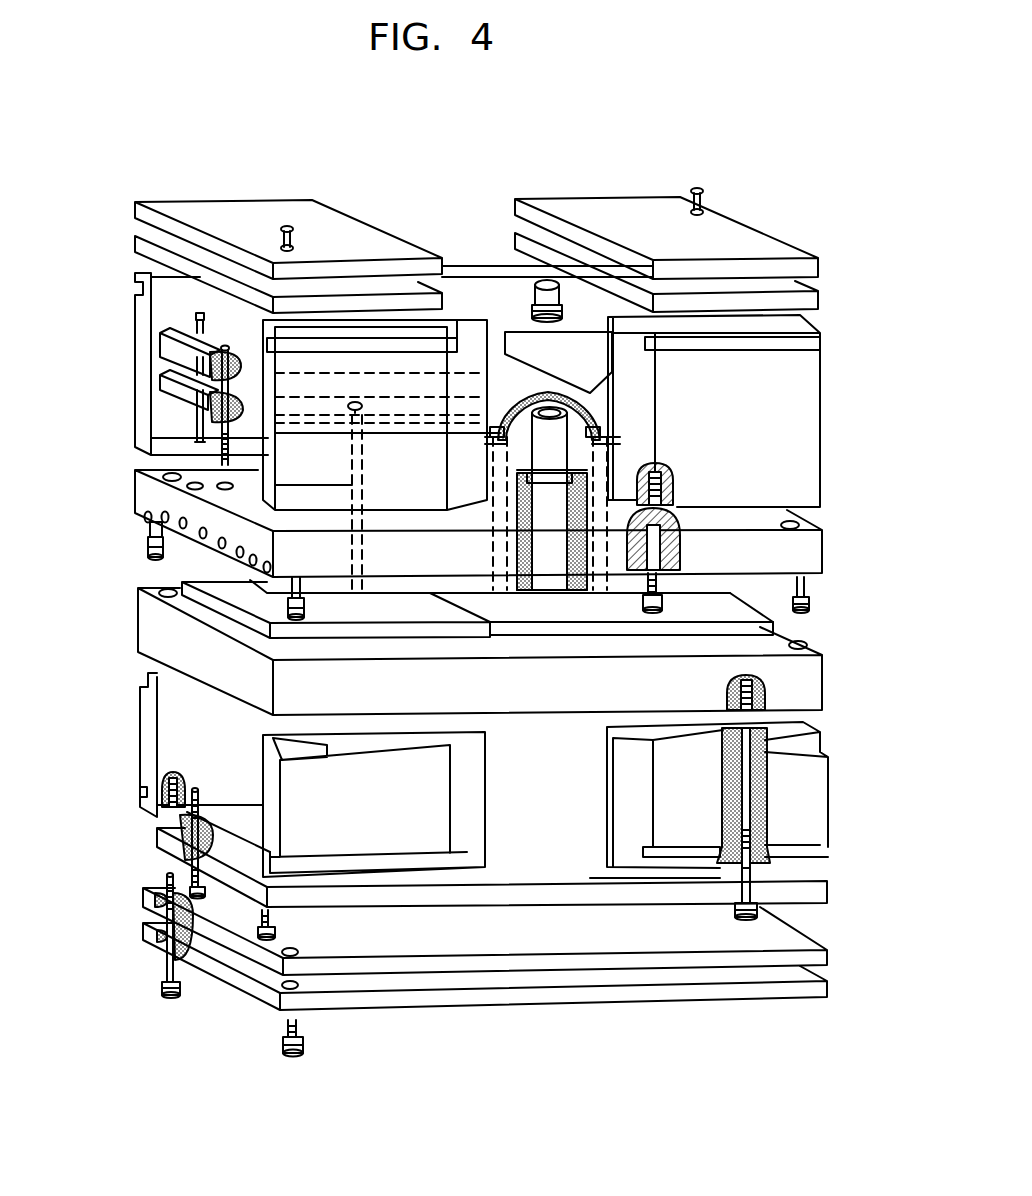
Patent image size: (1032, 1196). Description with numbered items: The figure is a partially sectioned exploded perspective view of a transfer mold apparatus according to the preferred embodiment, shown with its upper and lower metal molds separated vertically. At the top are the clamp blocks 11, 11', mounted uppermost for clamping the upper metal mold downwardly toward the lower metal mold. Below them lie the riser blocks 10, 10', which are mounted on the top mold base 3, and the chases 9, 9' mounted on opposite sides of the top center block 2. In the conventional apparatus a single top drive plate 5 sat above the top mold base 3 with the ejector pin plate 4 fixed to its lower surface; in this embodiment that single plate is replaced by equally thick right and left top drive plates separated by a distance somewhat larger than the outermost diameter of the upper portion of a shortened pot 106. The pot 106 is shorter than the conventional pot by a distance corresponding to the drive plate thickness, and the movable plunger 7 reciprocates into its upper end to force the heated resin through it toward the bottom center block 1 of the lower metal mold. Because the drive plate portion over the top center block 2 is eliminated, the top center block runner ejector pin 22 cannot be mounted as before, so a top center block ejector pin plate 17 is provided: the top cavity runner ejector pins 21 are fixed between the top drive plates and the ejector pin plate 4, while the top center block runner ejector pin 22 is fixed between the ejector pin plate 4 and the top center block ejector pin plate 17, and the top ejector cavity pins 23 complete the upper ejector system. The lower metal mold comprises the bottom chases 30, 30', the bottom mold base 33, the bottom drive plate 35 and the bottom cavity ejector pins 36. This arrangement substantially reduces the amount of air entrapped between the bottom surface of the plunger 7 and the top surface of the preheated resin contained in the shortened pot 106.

The bottom center block 1 is at (808, 698).
The top center block 2 is at (595, 632).
The top mold base 3 is at (815, 548).
The ejector pin plate 4 is at (165, 375).
The top drive plate 5 is at (167, 343).
The plunger 7 is at (545, 284).
The chase 9 is at (768, 593).
The chase 9' is at (186, 571).
The riser block 10 is at (757, 411).
The riser block 10' is at (280, 415).
The clamp block 11 is at (630, 242).
The clamp block 11' is at (288, 231).
The top center block ejector pin plate 17 is at (150, 440).
The top cavity runner ejector pin 21 is at (345, 484).
The top center block runner ejector pin 22 is at (503, 425).
The top ejector cavity pin 23 is at (590, 423).
The bottom chase 30 is at (819, 625).
The bottom chase 30' is at (269, 610).
The bottom mold base 33 is at (280, 778).
The bottom drive plate 35 is at (800, 940).
The bottom cavity ejector pin 36 is at (746, 872).
The shortened pot 106 is at (557, 465).